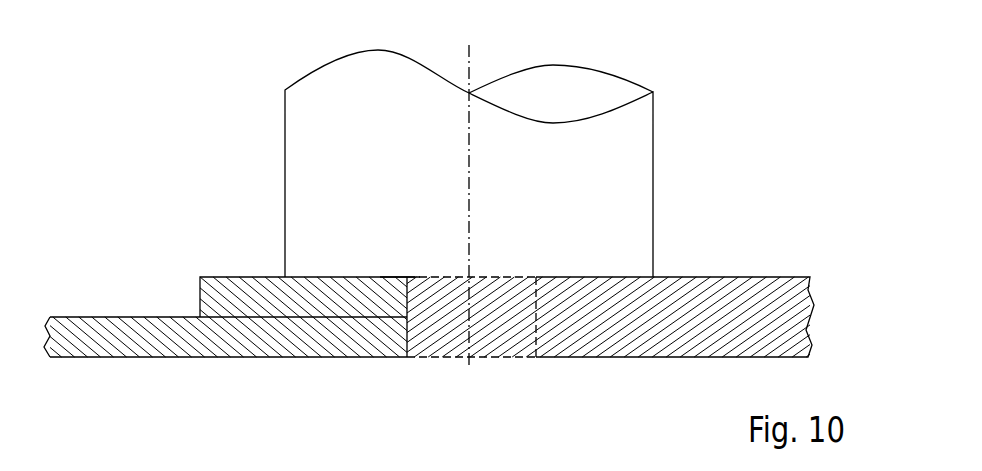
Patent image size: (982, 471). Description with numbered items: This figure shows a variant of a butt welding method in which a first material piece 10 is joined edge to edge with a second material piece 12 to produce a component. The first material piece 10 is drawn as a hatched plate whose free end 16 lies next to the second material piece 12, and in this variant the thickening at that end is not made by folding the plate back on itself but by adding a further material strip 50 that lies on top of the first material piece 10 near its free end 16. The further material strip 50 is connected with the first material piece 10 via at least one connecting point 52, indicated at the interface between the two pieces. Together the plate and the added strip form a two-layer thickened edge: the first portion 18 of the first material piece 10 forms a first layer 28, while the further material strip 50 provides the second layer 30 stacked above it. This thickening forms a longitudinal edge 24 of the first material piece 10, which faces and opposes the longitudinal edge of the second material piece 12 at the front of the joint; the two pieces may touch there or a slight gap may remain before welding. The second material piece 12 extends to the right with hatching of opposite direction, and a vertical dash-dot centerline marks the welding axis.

The first material piece 10 is at (80, 330).
The second material piece 12 is at (733, 288).
The free end 16 is at (368, 371).
The first portion 18 is at (221, 346).
The longitudinal edge 24 is at (402, 245).
The first layer 28 is at (316, 344).
The second layer 30 is at (338, 289).
The further material strip 50 is at (224, 288).
The connecting point 52 is at (262, 323).